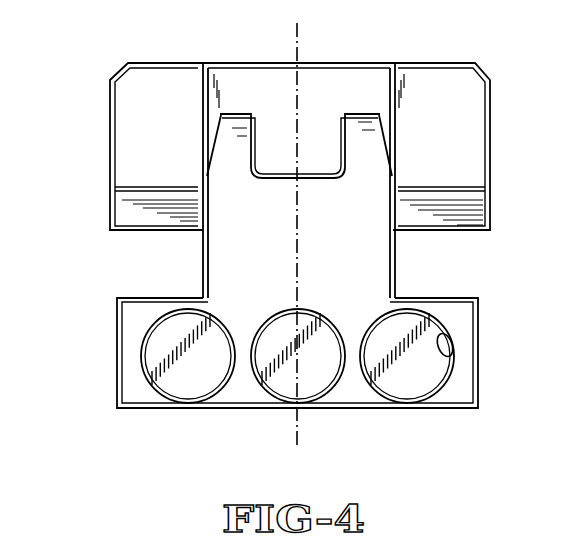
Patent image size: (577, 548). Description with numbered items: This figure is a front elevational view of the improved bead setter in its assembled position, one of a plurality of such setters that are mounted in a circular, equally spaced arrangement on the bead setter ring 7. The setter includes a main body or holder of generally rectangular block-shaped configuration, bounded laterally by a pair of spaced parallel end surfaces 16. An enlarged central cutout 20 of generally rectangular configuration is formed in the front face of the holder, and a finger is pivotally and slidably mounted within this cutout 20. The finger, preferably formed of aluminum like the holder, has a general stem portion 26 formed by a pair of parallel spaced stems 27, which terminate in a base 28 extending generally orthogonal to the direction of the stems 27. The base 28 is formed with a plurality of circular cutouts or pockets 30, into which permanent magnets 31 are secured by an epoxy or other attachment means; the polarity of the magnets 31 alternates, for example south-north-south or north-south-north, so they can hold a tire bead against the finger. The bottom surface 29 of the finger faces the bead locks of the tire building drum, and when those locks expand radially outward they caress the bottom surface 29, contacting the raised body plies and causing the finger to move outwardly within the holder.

The bead setter ring 7 is at (297, 23).
The end surfaces 16 is at (112, 137).
The central cutout 20 is at (393, 120).
The stem portion 26 is at (240, 213).
The stems 27 is at (373, 160).
The base 28 is at (137, 320).
The bottom surface 29 is at (372, 408).
The circular cutouts or pockets 30 is at (452, 355).
The permanent magnets 31 is at (427, 368).